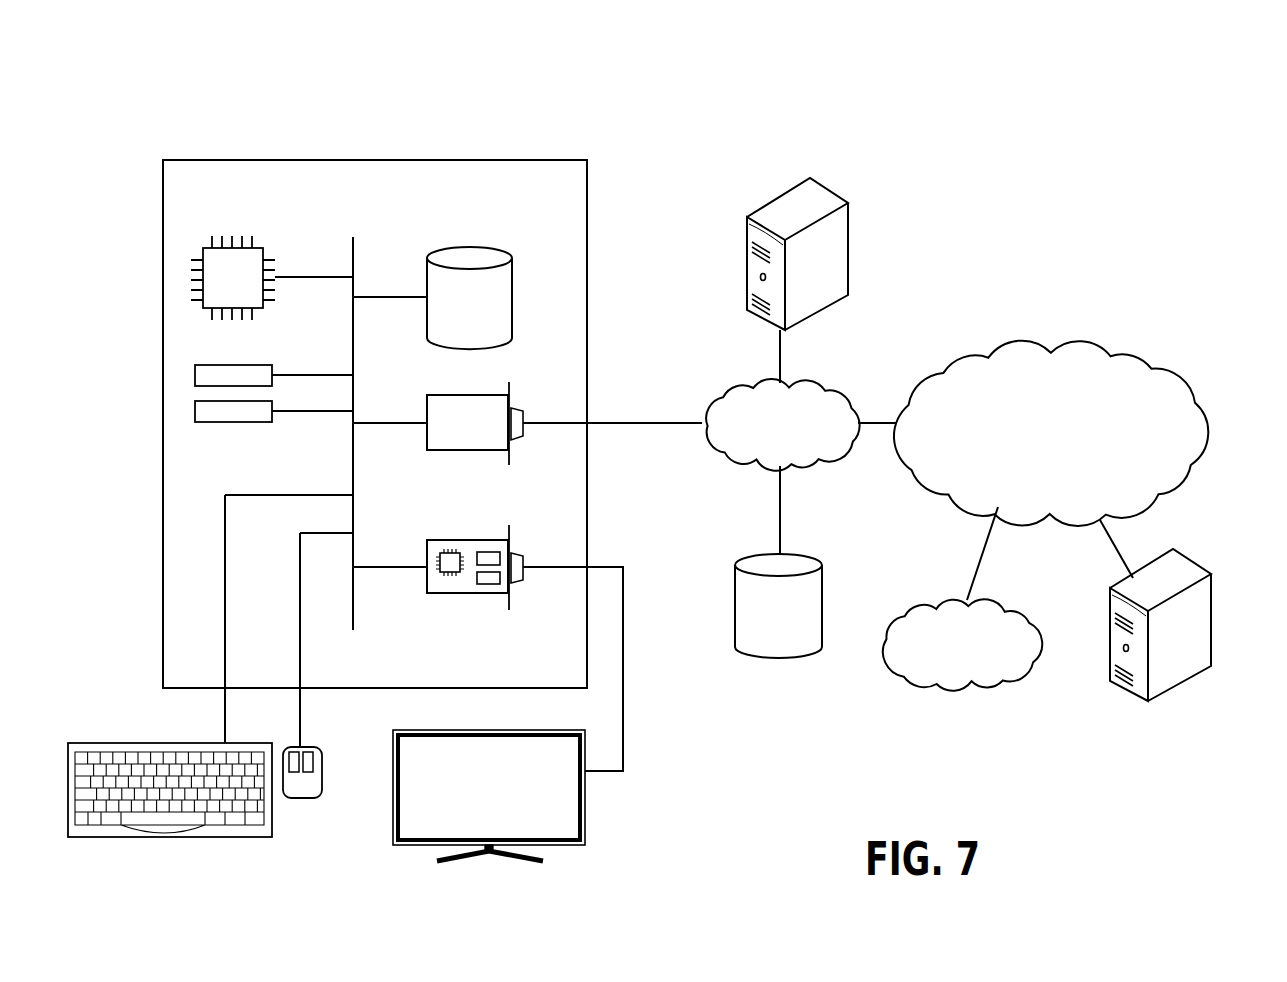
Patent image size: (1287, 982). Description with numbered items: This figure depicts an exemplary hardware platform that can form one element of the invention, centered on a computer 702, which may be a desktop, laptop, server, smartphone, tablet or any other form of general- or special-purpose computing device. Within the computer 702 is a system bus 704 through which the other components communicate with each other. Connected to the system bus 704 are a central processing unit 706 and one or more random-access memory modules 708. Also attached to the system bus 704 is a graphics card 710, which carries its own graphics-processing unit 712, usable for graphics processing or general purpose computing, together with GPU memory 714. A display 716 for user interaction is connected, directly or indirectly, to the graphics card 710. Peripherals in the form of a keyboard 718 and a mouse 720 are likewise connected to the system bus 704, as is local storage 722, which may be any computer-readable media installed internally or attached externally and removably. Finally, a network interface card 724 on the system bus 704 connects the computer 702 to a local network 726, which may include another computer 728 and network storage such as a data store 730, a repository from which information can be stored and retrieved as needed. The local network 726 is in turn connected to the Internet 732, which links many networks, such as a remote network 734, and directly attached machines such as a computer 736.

The computer 702 is at (540, 160).
The system bus 704 is at (354, 250).
The central processing unit 706 is at (258, 246).
The random-access memory modules 708 is at (273, 409).
The graphics card 710 is at (488, 635).
The graphics-processing unit 712 is at (448, 574).
The GPU memory 714 is at (487, 586).
The display 716 is at (586, 824).
The keyboard 718 is at (172, 840).
The mouse 720 is at (300, 798).
The local storage 722 is at (513, 277).
The network interface card 724 is at (427, 401).
The local network 726 is at (836, 380).
The computer 728 is at (840, 190).
The data store 730 is at (814, 556).
The Internet 732 is at (1097, 343).
The remote network 734 is at (1014, 603).
The computer 736 is at (1190, 558).